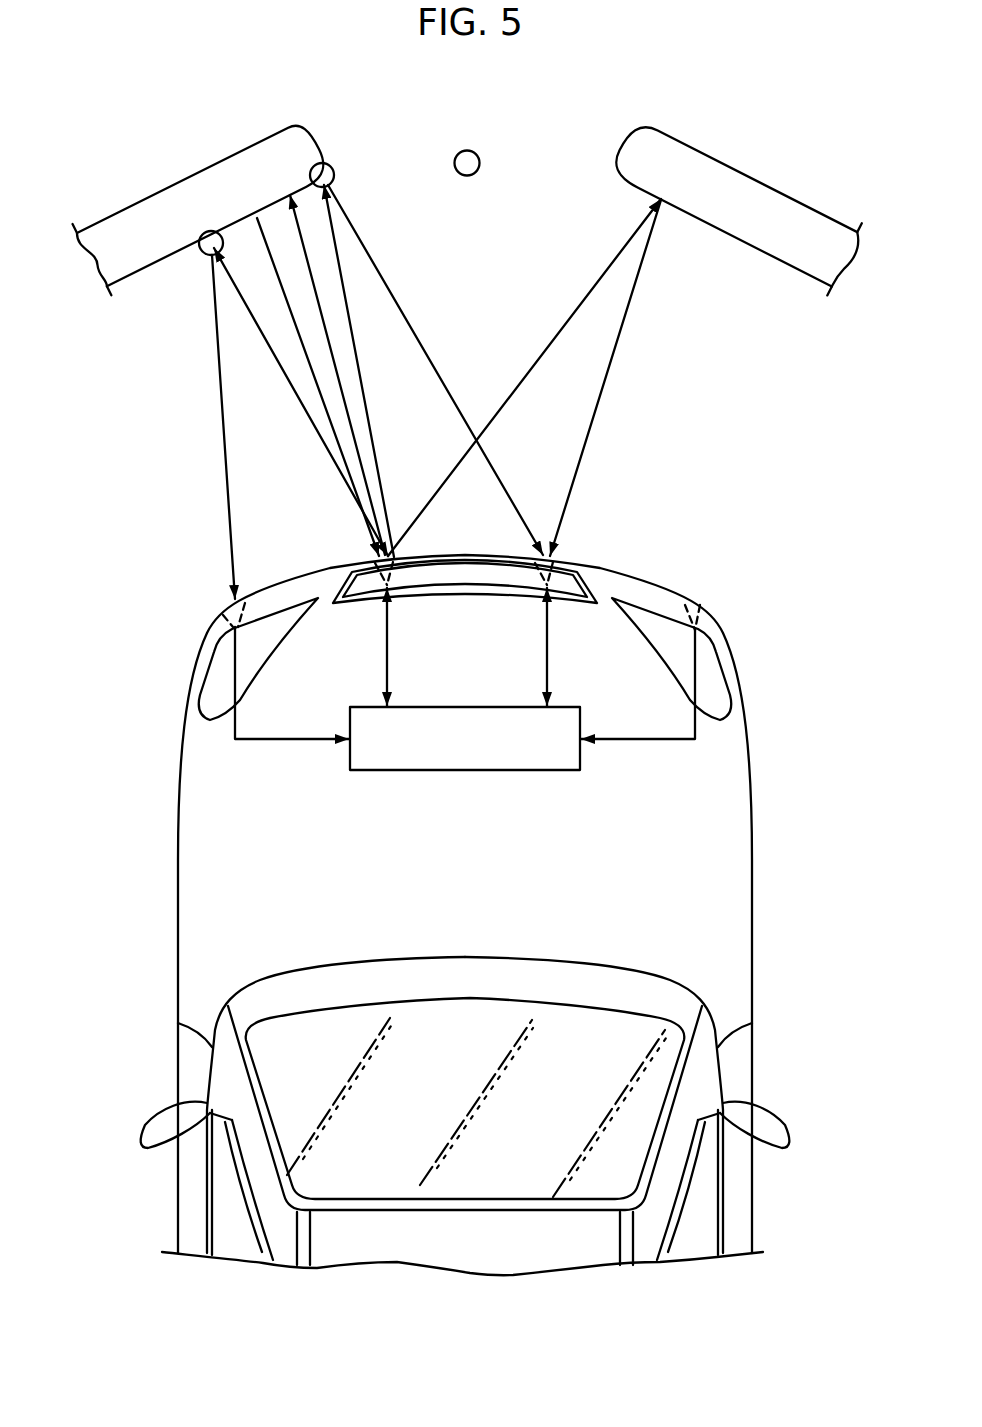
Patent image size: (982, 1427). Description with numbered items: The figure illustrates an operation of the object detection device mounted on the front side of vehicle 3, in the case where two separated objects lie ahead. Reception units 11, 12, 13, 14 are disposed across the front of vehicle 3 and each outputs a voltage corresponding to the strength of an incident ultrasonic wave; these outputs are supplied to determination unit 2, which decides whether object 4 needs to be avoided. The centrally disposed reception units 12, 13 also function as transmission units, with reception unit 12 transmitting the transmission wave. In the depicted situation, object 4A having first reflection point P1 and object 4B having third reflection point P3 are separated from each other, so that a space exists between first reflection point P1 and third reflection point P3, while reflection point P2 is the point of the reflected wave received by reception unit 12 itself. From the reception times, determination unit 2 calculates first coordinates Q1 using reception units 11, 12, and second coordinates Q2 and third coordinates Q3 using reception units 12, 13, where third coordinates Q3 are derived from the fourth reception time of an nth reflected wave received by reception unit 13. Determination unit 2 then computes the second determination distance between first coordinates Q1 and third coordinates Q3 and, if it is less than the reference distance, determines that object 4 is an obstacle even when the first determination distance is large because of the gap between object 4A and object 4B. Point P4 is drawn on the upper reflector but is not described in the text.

The determination unit 2 is at (442, 758).
The vehicle 3 is at (733, 842).
The object 4 is at (467, 204).
The object 4A is at (122, 220).
The object 4B is at (778, 205).
The reception unit 11 is at (233, 607).
The reception unit 12 is at (377, 560).
The reception unit 13 is at (553, 560).
The reception unit 14 is at (698, 607).
The first reflection point P1 is at (205, 233).
The reflection point P2 is at (289, 190).
The third reflection point P3 is at (655, 197).
The point P4 is at (318, 166).
The first coordinates Q1 is at (200, 254).
The second coordinates Q2 is at (460, 152).
The third coordinates Q3 is at (335, 172).